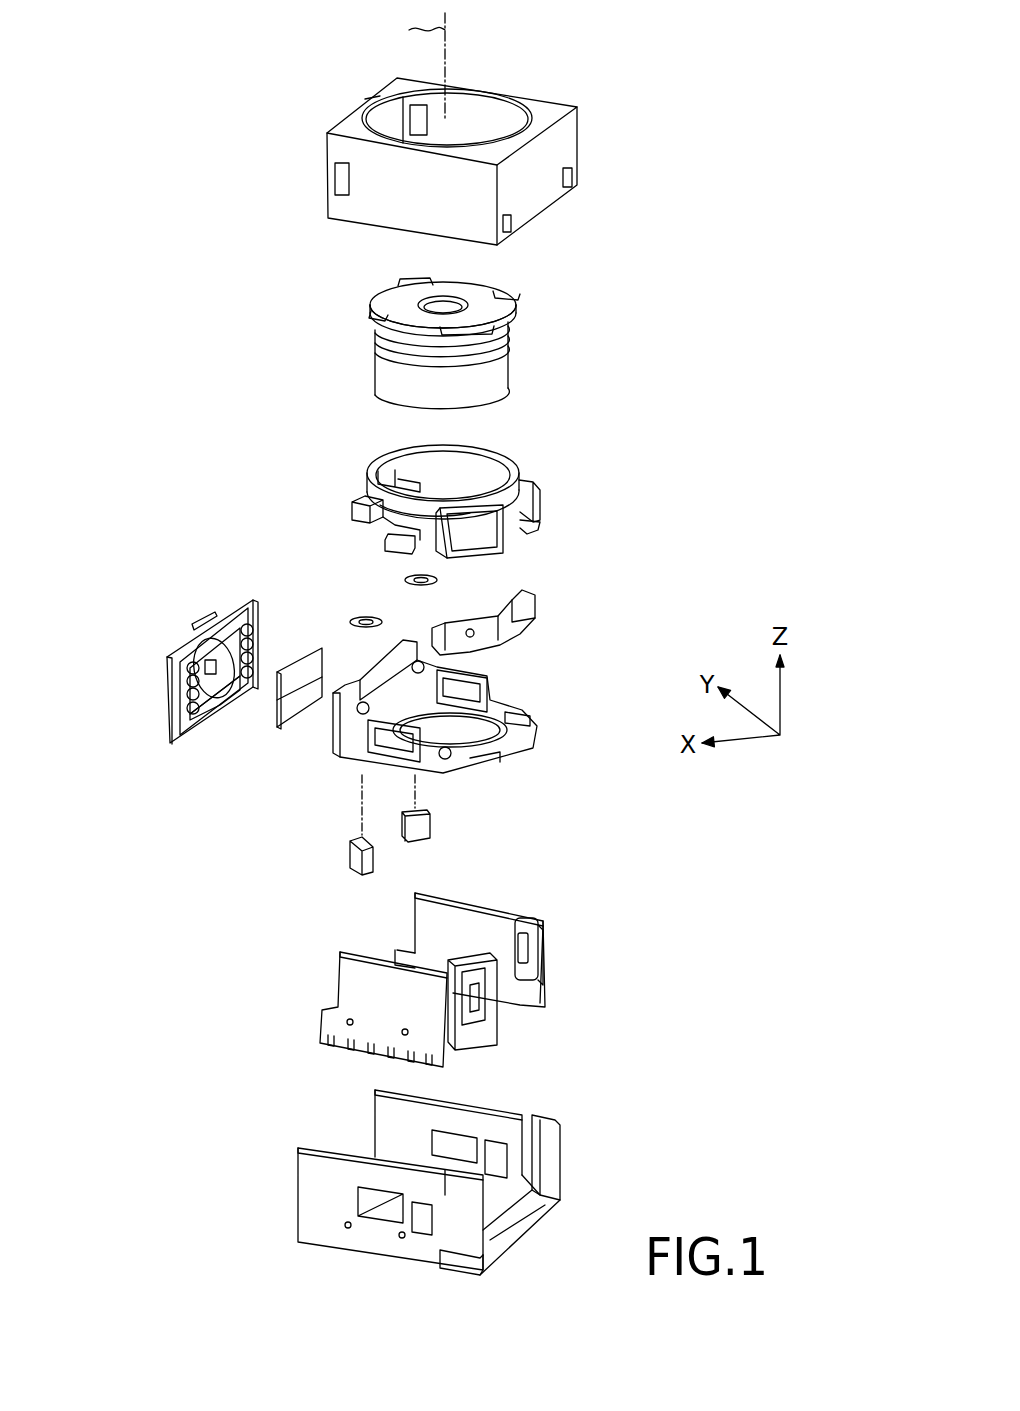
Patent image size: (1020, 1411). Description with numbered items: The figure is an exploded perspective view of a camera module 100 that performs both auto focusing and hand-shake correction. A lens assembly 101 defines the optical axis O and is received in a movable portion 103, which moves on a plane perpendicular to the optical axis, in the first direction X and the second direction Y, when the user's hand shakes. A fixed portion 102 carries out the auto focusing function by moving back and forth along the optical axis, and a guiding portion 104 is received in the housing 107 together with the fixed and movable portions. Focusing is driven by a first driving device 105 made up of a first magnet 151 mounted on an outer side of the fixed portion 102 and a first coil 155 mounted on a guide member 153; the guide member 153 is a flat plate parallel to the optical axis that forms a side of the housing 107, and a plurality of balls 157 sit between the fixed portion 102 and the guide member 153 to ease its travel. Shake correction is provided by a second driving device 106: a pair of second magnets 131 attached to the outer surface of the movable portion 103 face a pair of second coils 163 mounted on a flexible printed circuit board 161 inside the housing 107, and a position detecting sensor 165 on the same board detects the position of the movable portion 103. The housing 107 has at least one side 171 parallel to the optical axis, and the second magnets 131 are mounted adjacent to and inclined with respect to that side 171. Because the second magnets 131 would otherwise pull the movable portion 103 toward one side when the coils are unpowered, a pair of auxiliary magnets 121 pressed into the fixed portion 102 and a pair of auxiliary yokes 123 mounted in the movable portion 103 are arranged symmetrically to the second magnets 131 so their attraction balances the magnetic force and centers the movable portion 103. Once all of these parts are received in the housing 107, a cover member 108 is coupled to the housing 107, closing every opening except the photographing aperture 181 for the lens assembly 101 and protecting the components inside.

The camera module 100 is at (706, 140).
The cover member 108 is at (592, 131).
The photographing aperture 181 is at (458, 112).
The lens assembly 101 is at (527, 346).
The movable portion 103 is at (544, 466).
The second magnet 131 is at (487, 545).
The auxiliary yoke 123 is at (405, 580).
The guiding portion 104 is at (544, 604).
The fixed portion 102 is at (544, 717).
The first driving device 105 is at (140, 659).
The guide member 153 is at (195, 623).
The first coil 155 is at (223, 610).
The balls 157 is at (250, 632).
The first magnet 151 is at (292, 712).
The auxiliary magnet 121 is at (350, 855).
The second driving device 106 is at (566, 955).
The flexible printed circuit board 161 is at (505, 905).
The second coil 163 is at (540, 918).
The position detecting sensor 165 is at (495, 1033).
The housing 107 is at (582, 1155).
The side 171 is at (505, 1105).